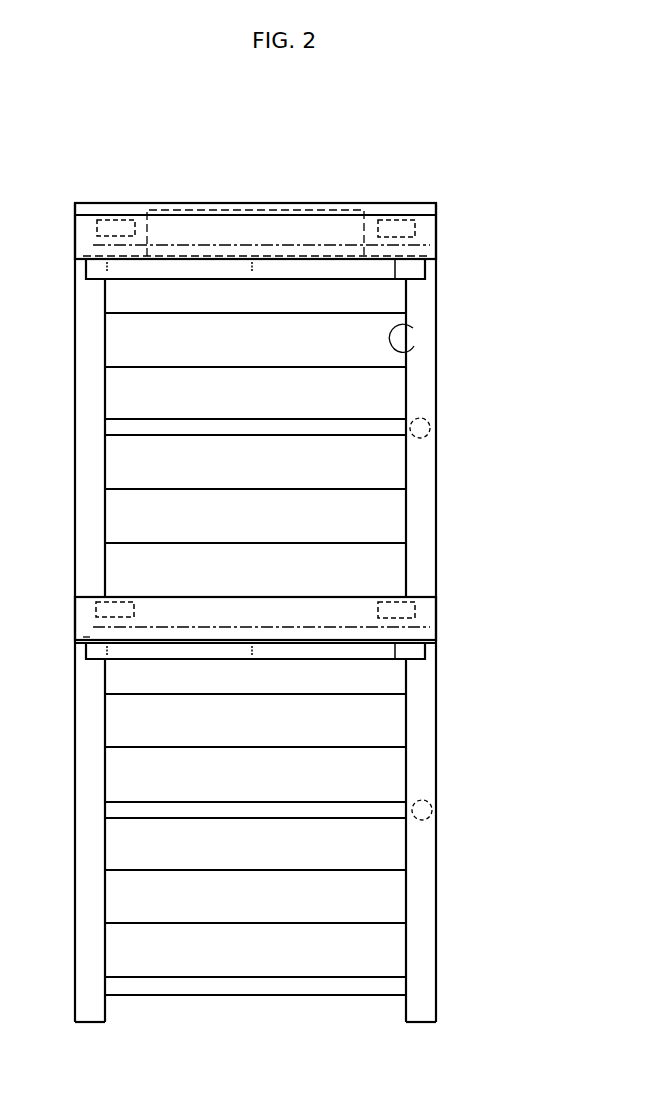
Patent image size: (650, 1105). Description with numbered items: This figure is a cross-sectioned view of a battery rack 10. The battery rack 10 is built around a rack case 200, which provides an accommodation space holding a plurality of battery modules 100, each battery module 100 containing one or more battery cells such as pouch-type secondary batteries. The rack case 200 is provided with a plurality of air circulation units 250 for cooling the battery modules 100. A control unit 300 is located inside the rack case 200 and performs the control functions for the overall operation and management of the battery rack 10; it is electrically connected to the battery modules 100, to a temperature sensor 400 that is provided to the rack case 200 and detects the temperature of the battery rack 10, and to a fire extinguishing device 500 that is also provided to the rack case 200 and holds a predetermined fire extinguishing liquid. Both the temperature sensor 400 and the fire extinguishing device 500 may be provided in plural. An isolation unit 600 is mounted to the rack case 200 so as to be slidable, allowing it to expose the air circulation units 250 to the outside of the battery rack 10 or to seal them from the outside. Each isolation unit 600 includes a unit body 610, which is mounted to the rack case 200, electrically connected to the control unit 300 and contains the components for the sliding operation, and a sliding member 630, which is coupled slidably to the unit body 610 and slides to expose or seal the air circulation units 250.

The battery rack 10 is at (70, 157).
The battery module 100 is at (367, 517).
The rack case 200 is at (441, 724).
The air circulation unit 250 is at (413, 328).
The control unit 300 is at (254, 210).
The temperature sensor 400 is at (424, 425).
The fire extinguishing device 500 is at (114, 220).
The isolation unit 600 is at (441, 235).
The unit body 610 is at (427, 617).
The sliding member 630 is at (415, 650).